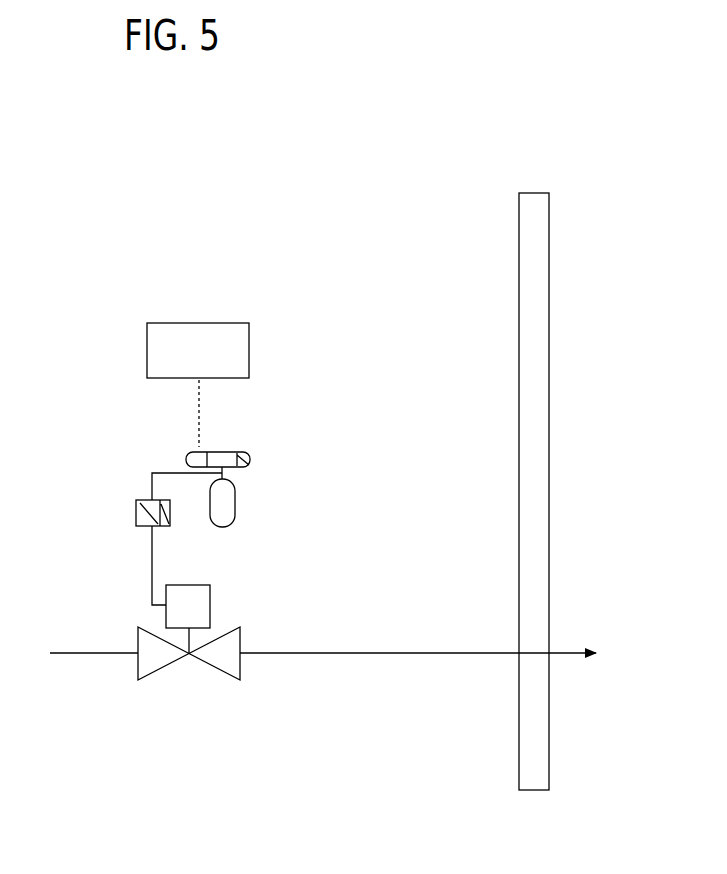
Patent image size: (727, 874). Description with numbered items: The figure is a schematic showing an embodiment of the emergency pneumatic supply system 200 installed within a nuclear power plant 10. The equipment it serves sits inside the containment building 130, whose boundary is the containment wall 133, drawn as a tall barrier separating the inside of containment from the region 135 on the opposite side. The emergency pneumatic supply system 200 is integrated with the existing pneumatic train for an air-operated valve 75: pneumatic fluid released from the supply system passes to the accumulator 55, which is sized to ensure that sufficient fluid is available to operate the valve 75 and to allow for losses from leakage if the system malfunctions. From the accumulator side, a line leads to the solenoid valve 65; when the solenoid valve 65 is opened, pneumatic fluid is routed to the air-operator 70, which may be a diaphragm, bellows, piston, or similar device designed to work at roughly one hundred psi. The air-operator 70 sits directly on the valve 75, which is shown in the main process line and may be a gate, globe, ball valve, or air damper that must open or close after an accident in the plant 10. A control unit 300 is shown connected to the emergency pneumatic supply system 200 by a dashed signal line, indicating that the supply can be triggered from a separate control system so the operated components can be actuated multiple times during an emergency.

The nuclear power plant 10 is at (216, 180).
The accumulator 55 is at (235, 498).
The solenoid valve 65 is at (136, 510).
The air-operator 70 is at (210, 597).
The air-operated valve 75 is at (215, 667).
The containment building 130 is at (371, 239).
The containment wall 133 is at (549, 533).
The second side / region 135 is at (636, 232).
The emergency pneumatic supply system 200 is at (233, 446).
The controller 300 is at (198, 385).